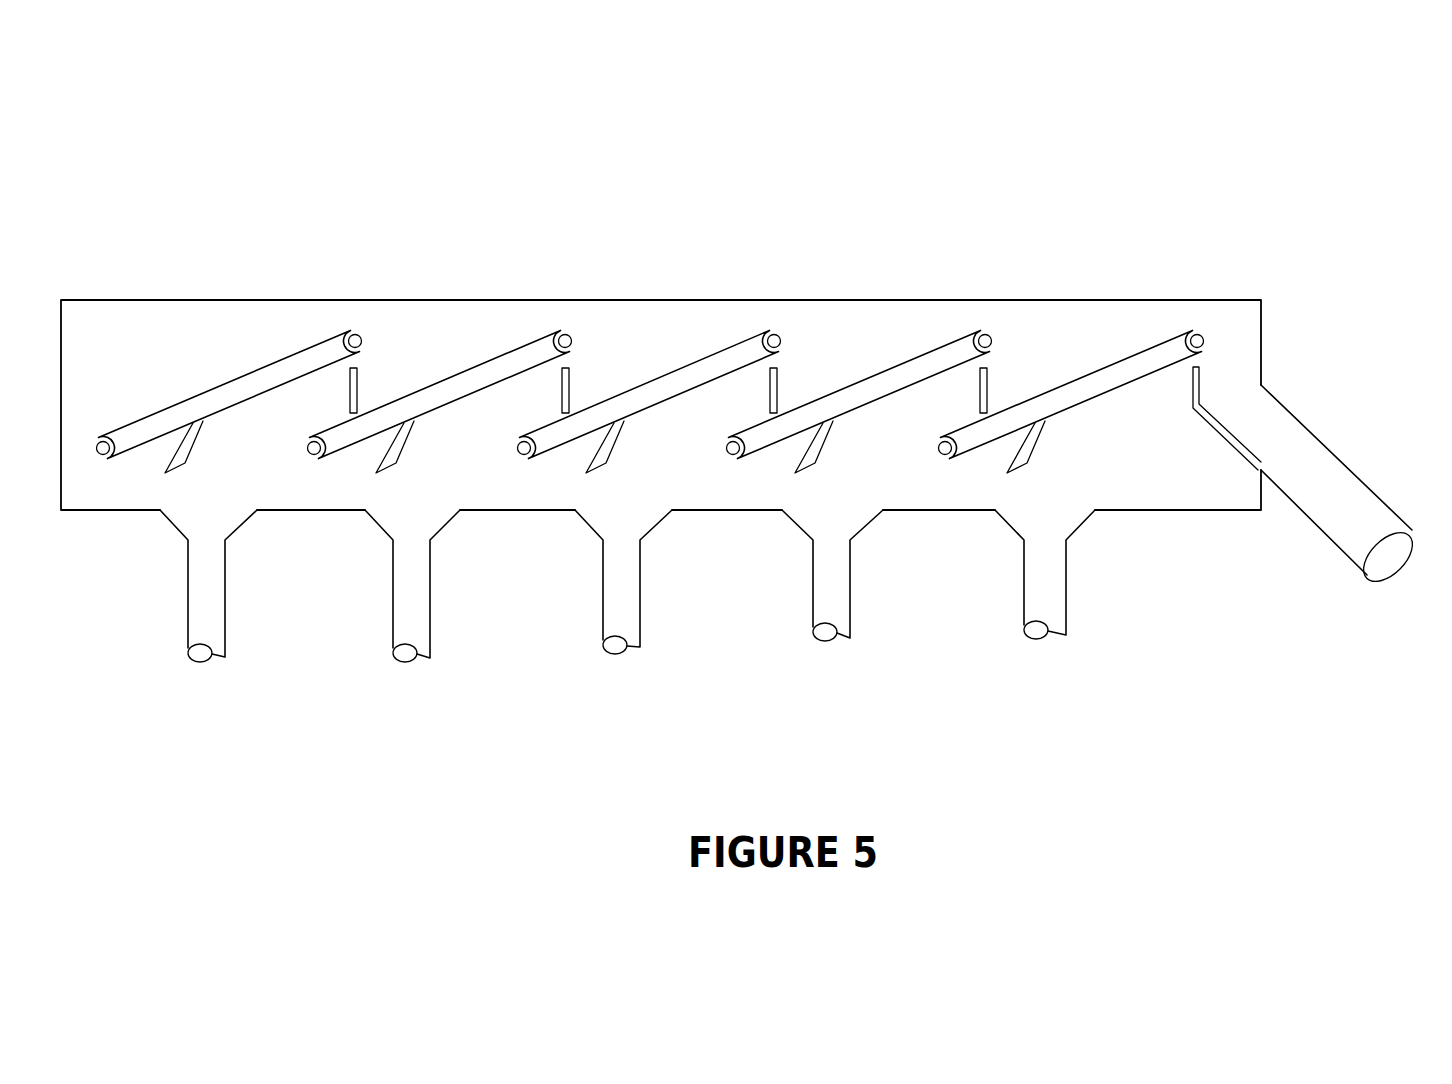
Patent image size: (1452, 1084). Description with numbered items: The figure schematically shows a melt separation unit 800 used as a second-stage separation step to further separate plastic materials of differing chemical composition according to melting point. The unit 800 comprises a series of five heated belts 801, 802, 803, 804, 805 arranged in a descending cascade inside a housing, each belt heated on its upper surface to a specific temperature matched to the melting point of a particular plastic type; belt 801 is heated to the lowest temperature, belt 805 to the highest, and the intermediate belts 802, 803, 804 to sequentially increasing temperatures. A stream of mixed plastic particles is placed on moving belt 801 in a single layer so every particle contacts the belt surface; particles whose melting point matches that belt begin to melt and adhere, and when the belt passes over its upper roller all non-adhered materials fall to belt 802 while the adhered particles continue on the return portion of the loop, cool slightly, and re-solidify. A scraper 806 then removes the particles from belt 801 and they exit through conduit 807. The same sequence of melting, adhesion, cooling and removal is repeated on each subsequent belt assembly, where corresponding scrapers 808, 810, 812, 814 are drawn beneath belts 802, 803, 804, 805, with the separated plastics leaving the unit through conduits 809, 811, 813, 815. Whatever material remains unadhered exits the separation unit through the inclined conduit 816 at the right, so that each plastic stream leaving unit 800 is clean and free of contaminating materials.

The melt separation unit 800 is at (633, 267).
The heated belt 801 is at (263, 367).
The heated belt 802 is at (518, 363).
The heated belt 803 is at (733, 340).
The heated belt 804 is at (921, 348).
The heated belt 805 is at (1143, 347).
The scraper 806 is at (170, 453).
The conduit 807 is at (203, 622).
The second deflector tab 808 is at (375, 455).
The conduit 809 is at (410, 622).
The third deflector tab 810 is at (588, 455).
The conduit 811 is at (623, 600).
The fourth deflector tab 812 is at (795, 455).
The conduit 813 is at (833, 592).
The fifth deflector tab 814 is at (1005, 455).
The conduit 815 is at (1043, 602).
The conduit 816 is at (1290, 458).